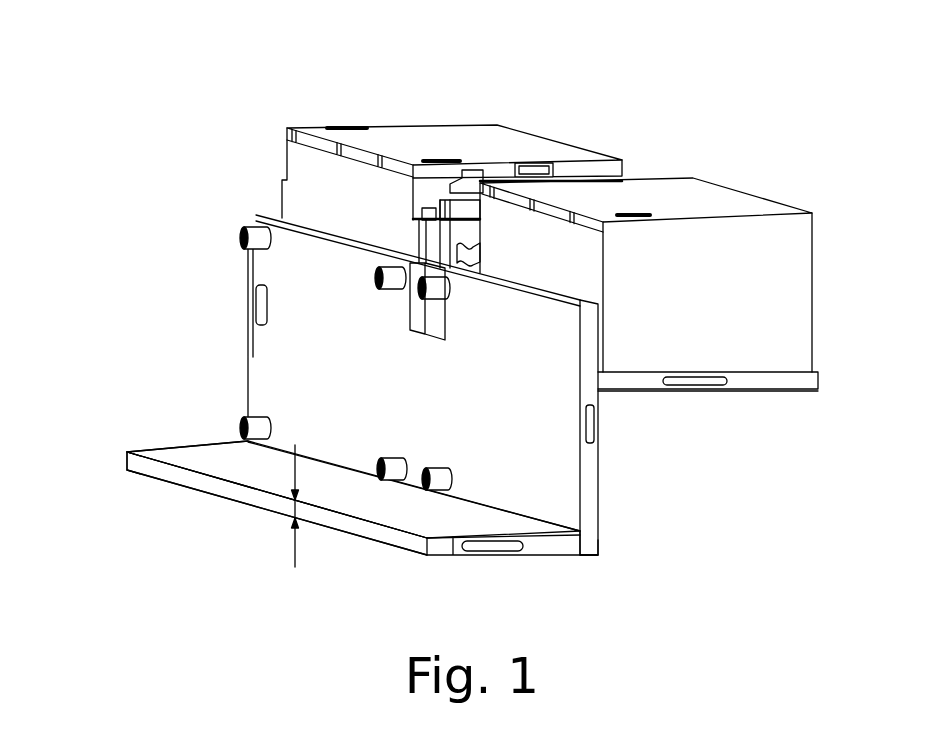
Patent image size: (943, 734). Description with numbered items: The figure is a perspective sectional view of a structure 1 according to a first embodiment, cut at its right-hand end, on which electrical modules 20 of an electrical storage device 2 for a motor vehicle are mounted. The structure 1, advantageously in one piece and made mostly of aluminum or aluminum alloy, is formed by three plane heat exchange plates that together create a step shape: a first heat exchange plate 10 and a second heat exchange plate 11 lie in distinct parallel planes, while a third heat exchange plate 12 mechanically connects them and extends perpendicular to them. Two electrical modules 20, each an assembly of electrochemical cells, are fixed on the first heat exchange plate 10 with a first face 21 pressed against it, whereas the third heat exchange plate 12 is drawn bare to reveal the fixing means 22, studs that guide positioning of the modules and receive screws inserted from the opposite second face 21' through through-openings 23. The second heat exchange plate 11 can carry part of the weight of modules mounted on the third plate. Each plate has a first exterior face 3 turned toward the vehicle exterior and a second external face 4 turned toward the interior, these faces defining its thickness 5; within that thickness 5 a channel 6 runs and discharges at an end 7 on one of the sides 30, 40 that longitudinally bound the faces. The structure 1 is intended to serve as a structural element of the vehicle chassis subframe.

The structure 1 is at (460, 386).
The electrical storage device 2 is at (571, 192).
The first exterior face 3 is at (228, 456).
The second external face 4 is at (373, 537).
The thickness 5 is at (293, 543).
The channel 6 is at (495, 590).
The end 7 is at (505, 545).
The first heat exchange plate 10 is at (561, 427).
The second heat exchange plate 11 is at (185, 503).
The third heat exchange plate 12 is at (625, 493).
The electrical module 20 is at (554, 200).
The first face 21 is at (736, 348).
The second face 21' is at (516, 130).
The fixing means 22 is at (253, 228).
The through-opening 23 is at (327, 128).
The side 30 is at (578, 545).
The side 40 is at (125, 453).